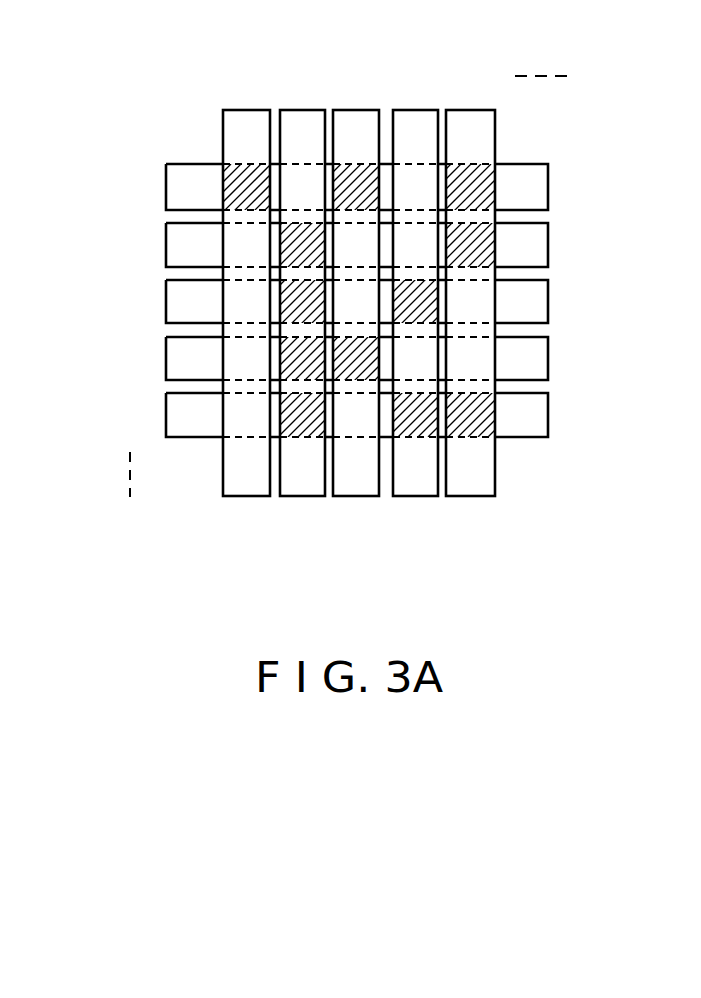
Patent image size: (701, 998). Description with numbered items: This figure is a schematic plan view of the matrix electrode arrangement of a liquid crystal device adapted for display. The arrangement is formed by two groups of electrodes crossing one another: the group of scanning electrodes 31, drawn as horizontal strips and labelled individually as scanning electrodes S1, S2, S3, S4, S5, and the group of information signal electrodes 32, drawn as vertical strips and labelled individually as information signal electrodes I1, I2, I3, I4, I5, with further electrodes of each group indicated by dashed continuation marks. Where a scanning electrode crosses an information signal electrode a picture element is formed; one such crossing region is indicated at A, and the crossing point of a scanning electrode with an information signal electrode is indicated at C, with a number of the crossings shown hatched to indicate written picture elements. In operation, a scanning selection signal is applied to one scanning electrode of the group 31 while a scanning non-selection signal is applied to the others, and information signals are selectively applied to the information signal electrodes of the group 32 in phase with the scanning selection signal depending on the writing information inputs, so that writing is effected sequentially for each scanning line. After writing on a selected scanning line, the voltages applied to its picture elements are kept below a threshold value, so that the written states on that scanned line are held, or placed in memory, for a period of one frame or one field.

The group of scanning electrodes 31 is at (110, 512).
The group of information signal electrodes 32 is at (612, 60).
The selected crossing region (hatched) A is at (247, 178).
The crossing point C is at (355, 313).
The row electrode S1 is at (337, 187).
The row electrode S2 is at (337, 245).
The row electrode S3 is at (337, 301).
The row electrode S4 is at (337, 358).
The row electrode S5 is at (337, 415).
The column electrode I1 is at (246, 284).
The column electrode I2 is at (302, 284).
The column electrode I3 is at (356, 284).
The column electrode I4 is at (415, 284).
The column electrode I5 is at (470, 284).